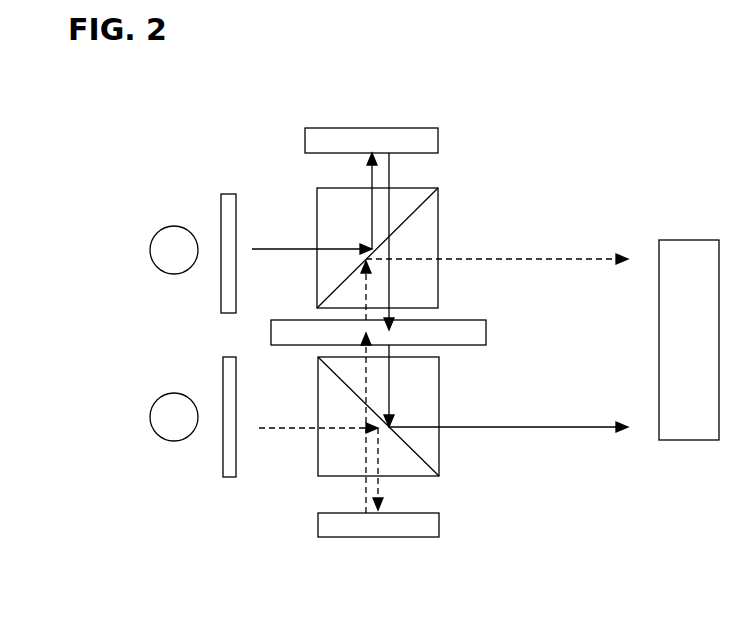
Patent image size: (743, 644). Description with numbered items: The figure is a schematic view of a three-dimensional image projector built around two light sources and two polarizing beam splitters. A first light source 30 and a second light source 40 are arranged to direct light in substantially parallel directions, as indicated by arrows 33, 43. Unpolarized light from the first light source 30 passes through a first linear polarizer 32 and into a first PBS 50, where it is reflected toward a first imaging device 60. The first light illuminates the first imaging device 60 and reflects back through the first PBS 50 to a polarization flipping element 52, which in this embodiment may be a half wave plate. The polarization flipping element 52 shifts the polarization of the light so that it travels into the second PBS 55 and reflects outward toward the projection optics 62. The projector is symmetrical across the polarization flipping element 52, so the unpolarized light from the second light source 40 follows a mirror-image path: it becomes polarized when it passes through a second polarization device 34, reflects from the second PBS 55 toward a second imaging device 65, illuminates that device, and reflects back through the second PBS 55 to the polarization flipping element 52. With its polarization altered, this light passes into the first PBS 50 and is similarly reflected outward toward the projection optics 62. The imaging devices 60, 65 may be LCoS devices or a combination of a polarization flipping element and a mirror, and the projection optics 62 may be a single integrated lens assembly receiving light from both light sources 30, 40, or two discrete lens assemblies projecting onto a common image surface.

The first light source 30 is at (157, 437).
The first linear polarizer 32 is at (227, 478).
The arrow 33 is at (280, 428).
The second polarization device 34 is at (226, 196).
The second light source 40 is at (155, 230).
The arrow 43 is at (258, 249).
The first PBS 50 is at (439, 453).
The polarization flipping element 52 is at (487, 332).
The second PBS 55 is at (438, 212).
The first imaging device 60 is at (319, 522).
The projection optics 62 is at (689, 340).
The second imaging device 65 is at (304, 140).